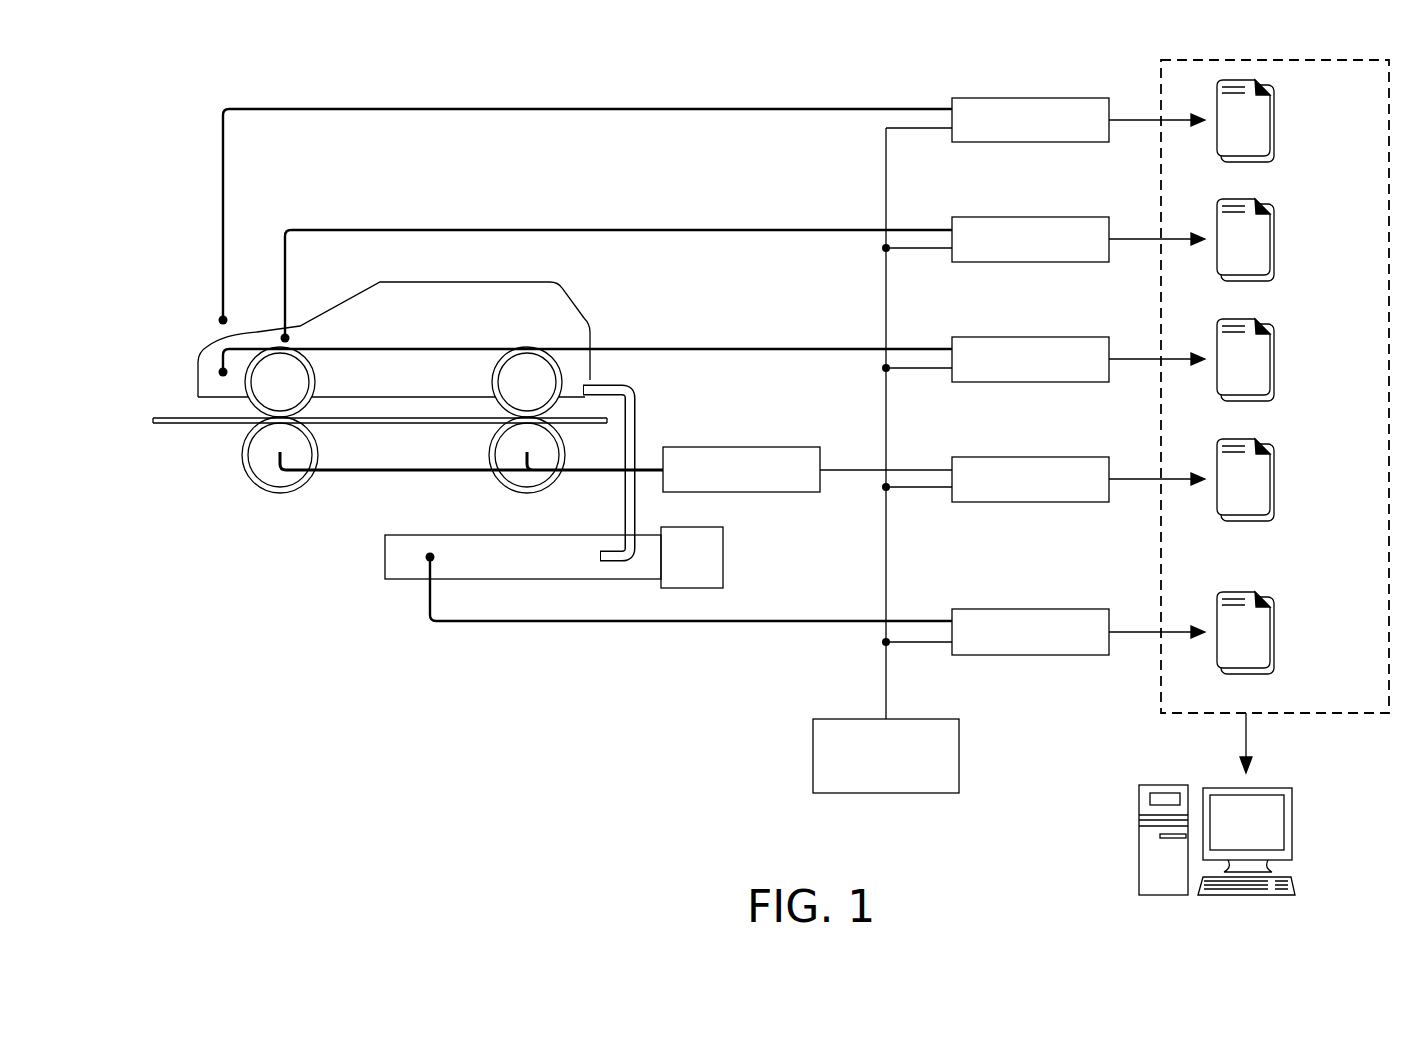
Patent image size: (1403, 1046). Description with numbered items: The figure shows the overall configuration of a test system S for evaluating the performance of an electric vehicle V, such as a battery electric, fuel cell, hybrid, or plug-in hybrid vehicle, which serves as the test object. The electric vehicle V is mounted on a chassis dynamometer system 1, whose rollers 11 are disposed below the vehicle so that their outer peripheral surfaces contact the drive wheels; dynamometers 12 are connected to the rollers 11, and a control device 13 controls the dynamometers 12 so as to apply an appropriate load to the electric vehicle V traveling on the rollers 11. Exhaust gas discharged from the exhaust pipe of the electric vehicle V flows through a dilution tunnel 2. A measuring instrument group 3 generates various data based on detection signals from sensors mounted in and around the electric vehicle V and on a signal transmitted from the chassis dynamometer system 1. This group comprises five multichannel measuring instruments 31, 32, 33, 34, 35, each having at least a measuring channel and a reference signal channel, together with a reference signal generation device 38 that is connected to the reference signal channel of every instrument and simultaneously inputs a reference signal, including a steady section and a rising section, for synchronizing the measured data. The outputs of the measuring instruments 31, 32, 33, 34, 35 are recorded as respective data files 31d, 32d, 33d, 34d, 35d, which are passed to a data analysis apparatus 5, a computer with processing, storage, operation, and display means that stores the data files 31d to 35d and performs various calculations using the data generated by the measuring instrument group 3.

The test system S is at (146, 114).
The electric vehicle V is at (563, 303).
The chassis dynamometer system 1 is at (276, 540).
The rollers 11 is at (243, 446).
The dynamometers 12 is at (258, 470).
The control device 13 is at (773, 447).
The dilution tunnel 2 is at (715, 553).
The measuring instrument group 3 is at (877, 64).
The first measuring instrument 31 is at (1085, 100).
The second measuring instrument 32 is at (1085, 339).
The third measuring instrument 33 is at (1085, 459).
The fourth measuring instrument 34 is at (1085, 219).
The fifth measuring instrument 35 is at (1085, 611).
The first data file 31d is at (1266, 122).
The second data file 32d is at (1266, 361).
The third data file 33d is at (1266, 481).
The fourth data file 34d is at (1266, 241).
The fifth data file 35d is at (1266, 634).
The reference signal generation device 38 is at (943, 721).
The data analysis apparatus 5 is at (1282, 790).